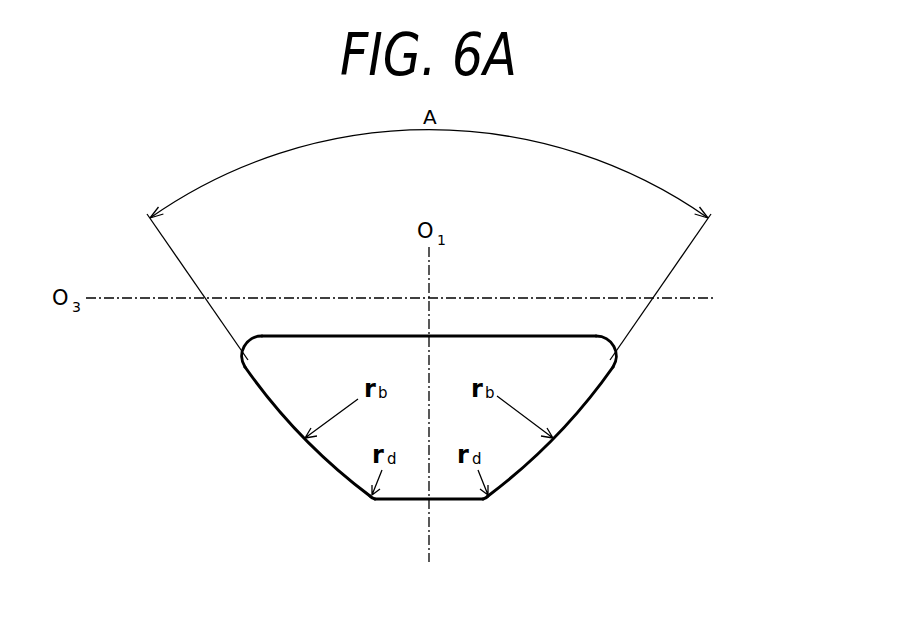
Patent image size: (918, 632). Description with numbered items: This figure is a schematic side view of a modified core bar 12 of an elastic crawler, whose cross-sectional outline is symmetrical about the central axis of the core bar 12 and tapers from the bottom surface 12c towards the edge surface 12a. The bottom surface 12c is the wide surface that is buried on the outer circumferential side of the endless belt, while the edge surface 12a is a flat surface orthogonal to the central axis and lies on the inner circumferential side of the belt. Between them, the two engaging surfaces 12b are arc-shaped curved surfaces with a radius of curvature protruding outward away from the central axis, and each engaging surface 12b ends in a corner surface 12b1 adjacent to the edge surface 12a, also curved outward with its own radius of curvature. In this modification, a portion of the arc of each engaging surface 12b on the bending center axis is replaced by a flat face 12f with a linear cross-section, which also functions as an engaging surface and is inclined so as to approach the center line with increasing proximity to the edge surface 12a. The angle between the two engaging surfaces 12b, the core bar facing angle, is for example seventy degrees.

The core bar 12 is at (363, 325).
The edge surface 12a is at (424, 502).
The engaging surfaces 12b is at (337, 475).
The corner surface 12b1 is at (510, 547).
The bottom surface 12c is at (478, 336).
The flat face 12f is at (250, 378).